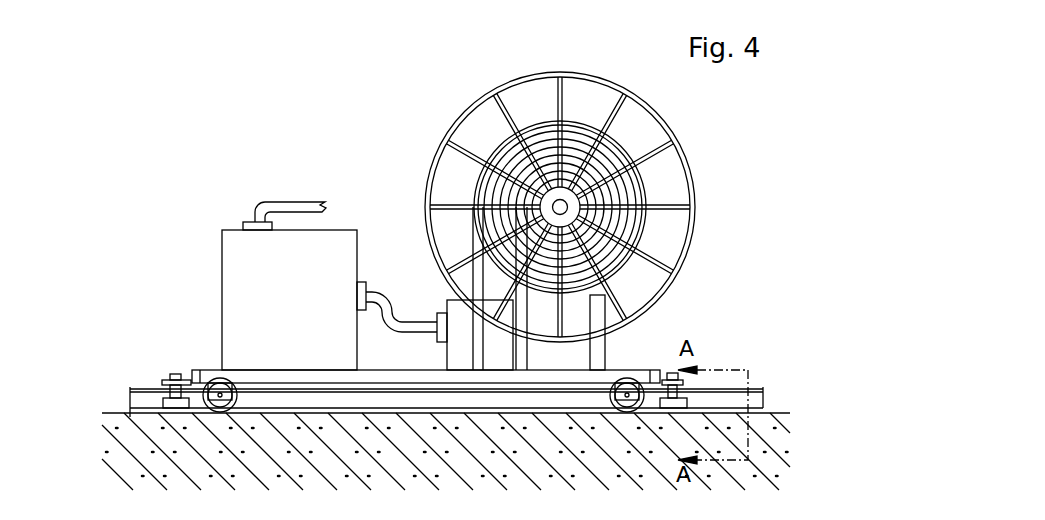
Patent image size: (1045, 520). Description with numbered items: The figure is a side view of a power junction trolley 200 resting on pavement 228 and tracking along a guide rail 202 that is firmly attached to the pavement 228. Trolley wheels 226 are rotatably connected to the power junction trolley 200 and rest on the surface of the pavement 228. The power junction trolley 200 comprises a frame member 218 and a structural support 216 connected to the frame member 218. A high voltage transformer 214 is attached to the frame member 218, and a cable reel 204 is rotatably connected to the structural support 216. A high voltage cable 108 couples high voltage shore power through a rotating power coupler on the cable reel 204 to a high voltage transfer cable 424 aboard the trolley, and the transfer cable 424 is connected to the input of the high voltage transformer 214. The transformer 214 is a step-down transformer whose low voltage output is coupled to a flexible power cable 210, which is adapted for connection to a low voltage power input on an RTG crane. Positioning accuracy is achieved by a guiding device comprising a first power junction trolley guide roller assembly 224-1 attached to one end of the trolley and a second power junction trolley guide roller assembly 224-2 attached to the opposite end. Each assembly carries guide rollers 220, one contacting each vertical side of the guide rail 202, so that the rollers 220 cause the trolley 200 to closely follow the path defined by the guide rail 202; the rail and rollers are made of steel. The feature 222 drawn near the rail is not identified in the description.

The power junction trolley 200 is at (223, 120).
The cable reel 204 is at (460, 117).
The high voltage cable 108 is at (480, 238).
The flexible power cable 210 is at (293, 202).
The high voltage transformer 214 is at (222, 287).
The high voltage transfer cable 424 is at (378, 292).
The structural support 216 is at (607, 347).
The frame member 218 is at (378, 369).
The trolley wheels 226 is at (238, 372).
The first power junction trolley guide roller assembly 224-1 is at (190, 371).
The second power junction trolley guide roller assembly 224-2 is at (688, 380).
The rail head 222 is at (163, 392).
The guide roller 220 is at (163, 400).
The guide rail 202 is at (727, 390).
The pavement 228 is at (105, 470).